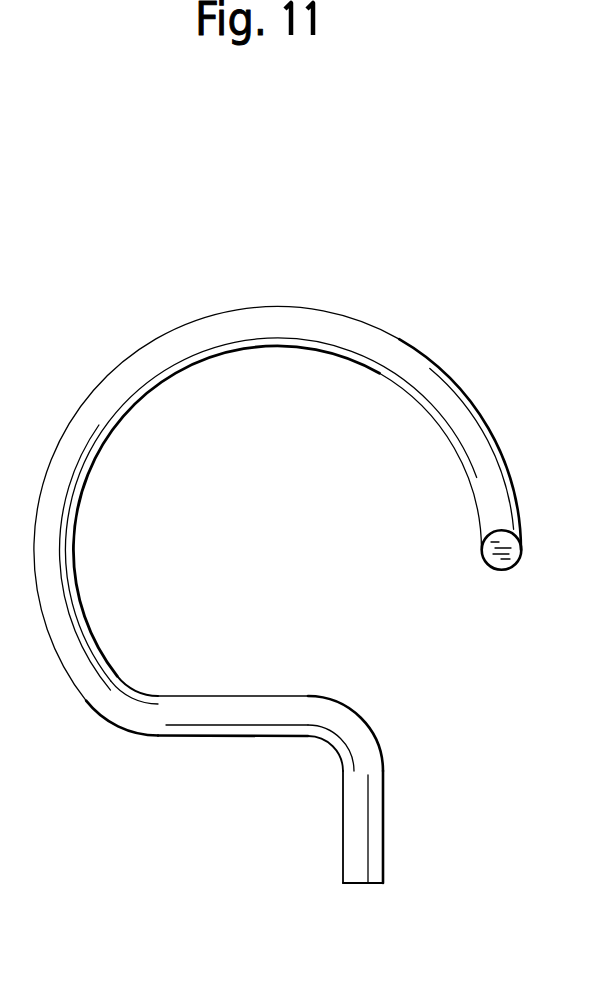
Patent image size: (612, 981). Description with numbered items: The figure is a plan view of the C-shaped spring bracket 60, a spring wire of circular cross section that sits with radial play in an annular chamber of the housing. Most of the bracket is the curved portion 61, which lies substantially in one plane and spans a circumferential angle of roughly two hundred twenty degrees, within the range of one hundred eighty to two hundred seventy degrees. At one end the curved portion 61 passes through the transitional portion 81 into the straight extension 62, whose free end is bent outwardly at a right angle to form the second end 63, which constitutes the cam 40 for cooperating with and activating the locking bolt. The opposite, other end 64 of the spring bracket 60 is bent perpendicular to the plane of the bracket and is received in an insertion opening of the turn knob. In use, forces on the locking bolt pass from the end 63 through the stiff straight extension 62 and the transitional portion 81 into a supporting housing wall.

The spring bracket 60 is at (277, 594).
The curved portion 61 is at (398, 340).
The straight extension 62 is at (245, 713).
The second end 63 is at (363, 845).
The other end 64 is at (498, 562).
The transitional portion 81 is at (120, 695).
The cam 40 is at (342, 860).